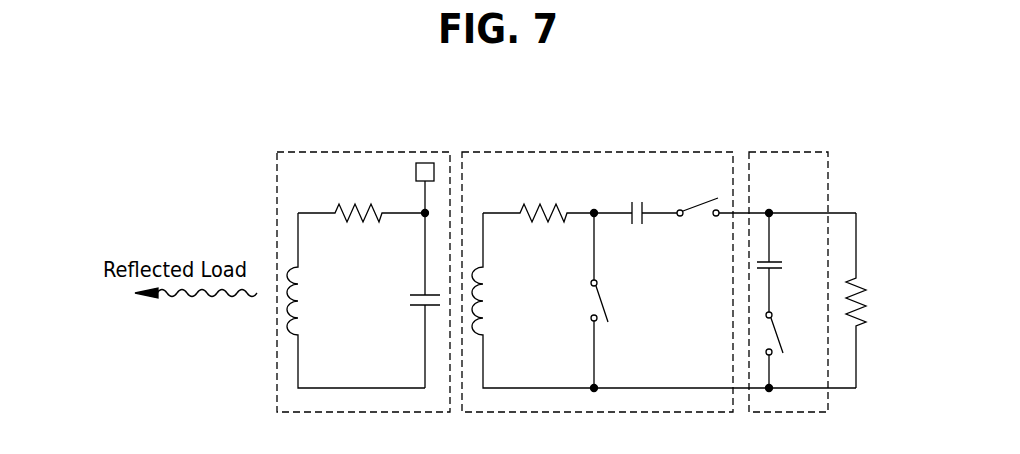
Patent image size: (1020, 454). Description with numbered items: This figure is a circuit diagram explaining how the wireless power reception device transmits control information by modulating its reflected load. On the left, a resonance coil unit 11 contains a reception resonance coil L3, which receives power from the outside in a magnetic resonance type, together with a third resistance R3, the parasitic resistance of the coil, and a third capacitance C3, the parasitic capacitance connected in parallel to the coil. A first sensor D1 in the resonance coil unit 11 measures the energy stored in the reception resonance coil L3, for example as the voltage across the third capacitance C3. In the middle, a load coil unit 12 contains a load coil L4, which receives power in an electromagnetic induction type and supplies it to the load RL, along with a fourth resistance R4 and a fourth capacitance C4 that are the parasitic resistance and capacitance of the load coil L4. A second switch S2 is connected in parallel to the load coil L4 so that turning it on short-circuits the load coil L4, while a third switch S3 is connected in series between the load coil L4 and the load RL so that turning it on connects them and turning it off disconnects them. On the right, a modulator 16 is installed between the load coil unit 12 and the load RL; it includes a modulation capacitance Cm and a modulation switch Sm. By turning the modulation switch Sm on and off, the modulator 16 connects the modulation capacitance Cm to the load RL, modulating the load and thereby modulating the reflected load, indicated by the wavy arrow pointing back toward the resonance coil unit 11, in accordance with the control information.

The resonance coil unit 11 is at (347, 152).
The first sensor D1 is at (426, 163).
The load coil unit 12 is at (610, 152).
The modulator 16 is at (795, 152).
The third resistance R3 is at (361, 198).
The reception resonance coil L3 is at (356, 300).
The third capacitance C3 is at (416, 300).
The fourth resistance R4 is at (538, 198).
The load coil L4 is at (664, 300).
The second switch S2 is at (586, 300).
The fourth capacitance C4 is at (635, 199).
The third switch S3 is at (766, 196).
The modulation capacitance Cm is at (788, 262).
The modulation switch Sm is at (792, 350).
The load RL is at (871, 300).